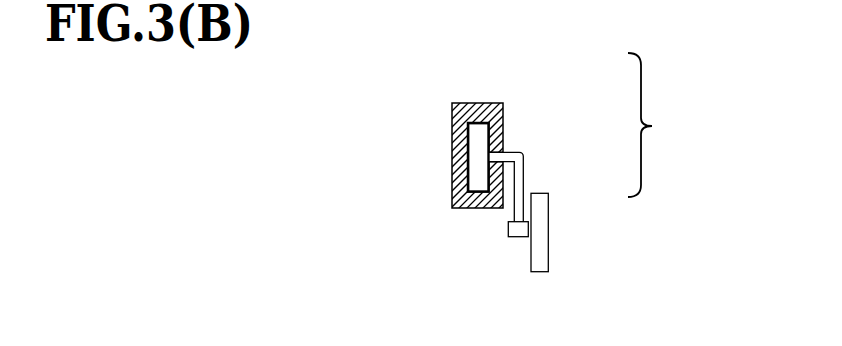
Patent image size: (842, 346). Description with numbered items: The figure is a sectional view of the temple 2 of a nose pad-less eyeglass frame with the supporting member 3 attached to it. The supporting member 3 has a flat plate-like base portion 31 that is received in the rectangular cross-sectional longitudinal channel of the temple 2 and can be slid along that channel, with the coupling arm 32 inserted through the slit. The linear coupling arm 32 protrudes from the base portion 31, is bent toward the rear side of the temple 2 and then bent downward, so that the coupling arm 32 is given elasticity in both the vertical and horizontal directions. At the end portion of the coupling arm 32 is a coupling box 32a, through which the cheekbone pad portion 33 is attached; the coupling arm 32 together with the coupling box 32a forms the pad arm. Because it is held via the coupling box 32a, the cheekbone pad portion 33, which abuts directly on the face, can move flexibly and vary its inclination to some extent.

The temple 2 is at (456, 137).
The supporting member 3 is at (654, 125).
The base portion 31 is at (480, 137).
The coupling arm 32 is at (526, 175).
The coupling box 32a is at (515, 231).
The cheekbone pad portion 33 is at (546, 217).